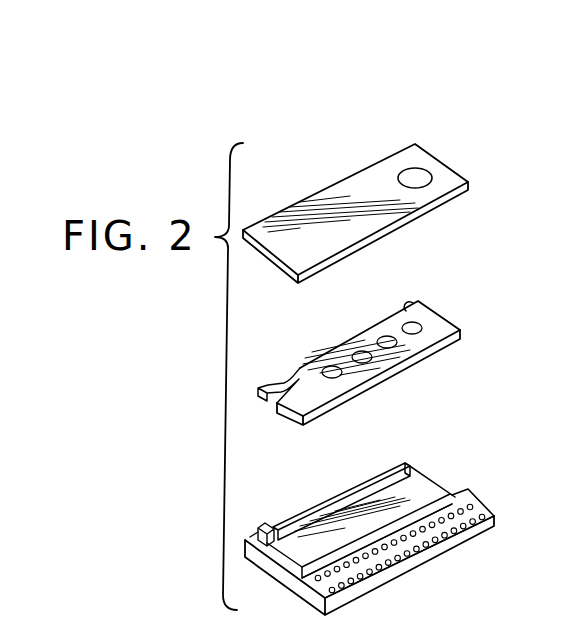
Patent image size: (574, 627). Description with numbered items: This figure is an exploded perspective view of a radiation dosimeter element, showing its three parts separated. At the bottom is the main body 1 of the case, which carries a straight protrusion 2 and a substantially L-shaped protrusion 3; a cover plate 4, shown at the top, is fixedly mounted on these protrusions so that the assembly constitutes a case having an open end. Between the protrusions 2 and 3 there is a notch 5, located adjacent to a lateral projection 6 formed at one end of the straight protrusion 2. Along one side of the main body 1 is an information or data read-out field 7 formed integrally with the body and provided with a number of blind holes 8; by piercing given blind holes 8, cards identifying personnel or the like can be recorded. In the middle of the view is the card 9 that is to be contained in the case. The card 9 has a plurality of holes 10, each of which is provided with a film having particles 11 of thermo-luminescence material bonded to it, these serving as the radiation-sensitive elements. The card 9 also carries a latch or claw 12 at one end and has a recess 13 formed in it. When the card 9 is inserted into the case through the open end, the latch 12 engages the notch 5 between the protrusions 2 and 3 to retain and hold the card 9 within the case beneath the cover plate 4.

The main body of a case 1 is at (287, 573).
The straight protrusion 2 is at (345, 490).
The L-shaped protrusion 3 is at (449, 494).
The cover plate 4 is at (344, 186).
The notch 5 is at (256, 537).
The lateral projection 6 is at (266, 531).
The information or data read-out field 7 is at (427, 556).
The blind holes 8 is at (448, 533).
The card 9 is at (437, 320).
The holes 10 is at (408, 357).
The particles of thermo-luminescence material 11 is at (385, 337).
The latch or claw 12 is at (267, 385).
The recess 13 is at (410, 305).